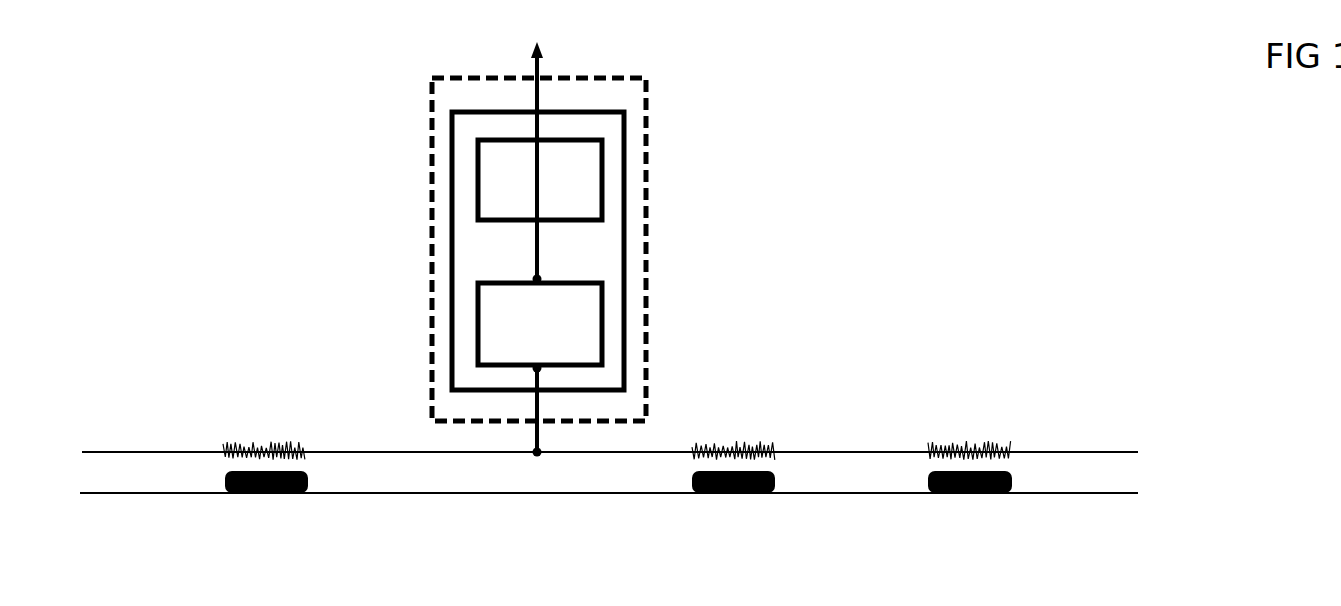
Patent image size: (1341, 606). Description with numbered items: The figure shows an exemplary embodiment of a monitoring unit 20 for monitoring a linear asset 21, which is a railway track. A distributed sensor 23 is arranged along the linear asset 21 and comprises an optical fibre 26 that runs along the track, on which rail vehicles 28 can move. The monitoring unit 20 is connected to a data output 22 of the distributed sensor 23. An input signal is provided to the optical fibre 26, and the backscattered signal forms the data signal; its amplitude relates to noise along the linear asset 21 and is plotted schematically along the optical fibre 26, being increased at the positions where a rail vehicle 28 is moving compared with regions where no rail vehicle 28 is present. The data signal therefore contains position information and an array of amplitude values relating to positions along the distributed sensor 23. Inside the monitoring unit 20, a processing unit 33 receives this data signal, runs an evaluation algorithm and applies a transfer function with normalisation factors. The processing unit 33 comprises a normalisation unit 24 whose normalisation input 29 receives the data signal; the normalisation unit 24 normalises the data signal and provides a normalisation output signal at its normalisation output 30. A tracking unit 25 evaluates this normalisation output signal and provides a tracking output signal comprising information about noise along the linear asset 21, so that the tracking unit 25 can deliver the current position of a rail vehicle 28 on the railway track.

The monitoring unit 20 is at (650, 112).
The linear asset 21 is at (1098, 493).
The data output 22 is at (543, 443).
The distributed sensor 23 is at (1153, 450).
The normalisation unit 24 is at (590, 337).
The tracking unit 25 is at (585, 186).
The optical fibre 26 is at (1030, 452).
The rail vehicle 28 is at (270, 494).
The normalisation input 29 is at (544, 370).
The normalisation output 30 is at (541, 278).
The processing unit 33 is at (626, 247).